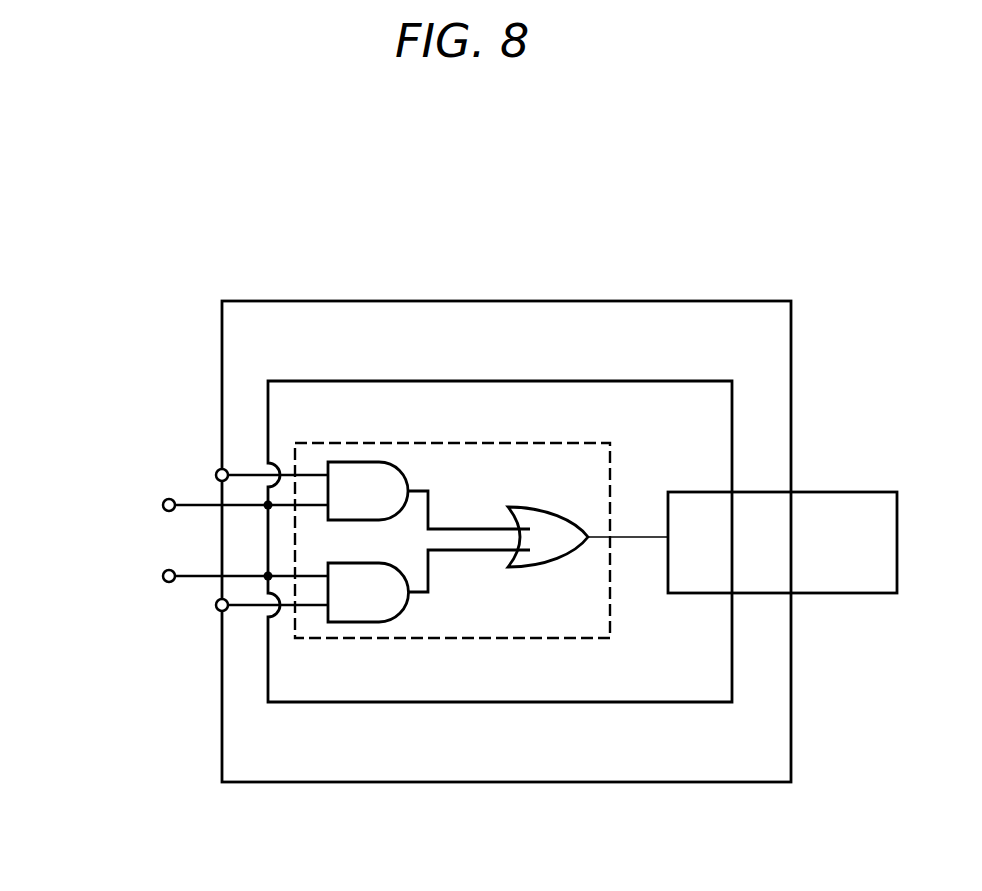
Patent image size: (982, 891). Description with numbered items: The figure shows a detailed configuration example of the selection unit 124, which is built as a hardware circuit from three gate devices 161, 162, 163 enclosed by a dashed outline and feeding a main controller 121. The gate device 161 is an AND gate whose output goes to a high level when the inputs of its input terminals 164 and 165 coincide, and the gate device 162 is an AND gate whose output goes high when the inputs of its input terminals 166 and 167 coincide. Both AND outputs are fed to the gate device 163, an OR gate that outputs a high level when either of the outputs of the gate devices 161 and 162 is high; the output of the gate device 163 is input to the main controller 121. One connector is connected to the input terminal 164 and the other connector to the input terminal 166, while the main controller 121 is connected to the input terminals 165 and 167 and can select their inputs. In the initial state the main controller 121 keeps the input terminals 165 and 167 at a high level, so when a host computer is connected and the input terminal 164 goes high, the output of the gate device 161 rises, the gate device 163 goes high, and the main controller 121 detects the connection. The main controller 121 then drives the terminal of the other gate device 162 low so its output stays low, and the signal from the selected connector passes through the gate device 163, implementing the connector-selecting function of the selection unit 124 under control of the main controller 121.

The main controller 121 is at (862, 492).
The selection unit 124 is at (545, 640).
The gate device 161 is at (365, 462).
The gate device 162 is at (363, 622).
The gate device 163 is at (545, 507).
The input terminal 164 is at (163, 505).
The input terminal 165 is at (216, 474).
The input terminal 166 is at (163, 576).
The input terminal 167 is at (217, 609).